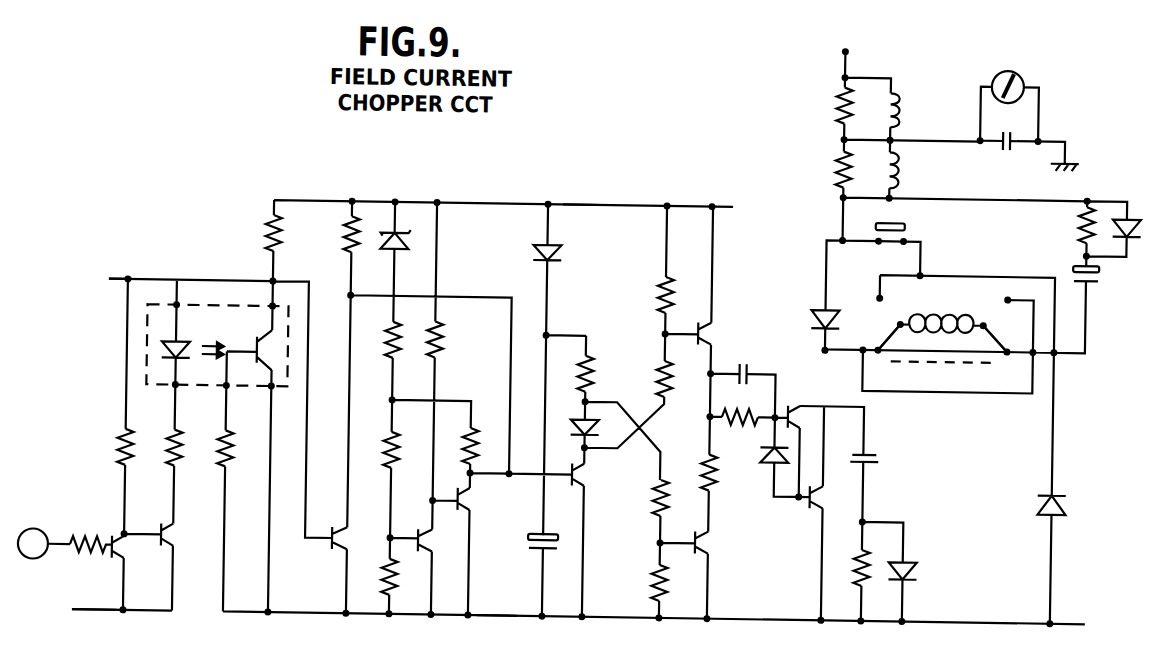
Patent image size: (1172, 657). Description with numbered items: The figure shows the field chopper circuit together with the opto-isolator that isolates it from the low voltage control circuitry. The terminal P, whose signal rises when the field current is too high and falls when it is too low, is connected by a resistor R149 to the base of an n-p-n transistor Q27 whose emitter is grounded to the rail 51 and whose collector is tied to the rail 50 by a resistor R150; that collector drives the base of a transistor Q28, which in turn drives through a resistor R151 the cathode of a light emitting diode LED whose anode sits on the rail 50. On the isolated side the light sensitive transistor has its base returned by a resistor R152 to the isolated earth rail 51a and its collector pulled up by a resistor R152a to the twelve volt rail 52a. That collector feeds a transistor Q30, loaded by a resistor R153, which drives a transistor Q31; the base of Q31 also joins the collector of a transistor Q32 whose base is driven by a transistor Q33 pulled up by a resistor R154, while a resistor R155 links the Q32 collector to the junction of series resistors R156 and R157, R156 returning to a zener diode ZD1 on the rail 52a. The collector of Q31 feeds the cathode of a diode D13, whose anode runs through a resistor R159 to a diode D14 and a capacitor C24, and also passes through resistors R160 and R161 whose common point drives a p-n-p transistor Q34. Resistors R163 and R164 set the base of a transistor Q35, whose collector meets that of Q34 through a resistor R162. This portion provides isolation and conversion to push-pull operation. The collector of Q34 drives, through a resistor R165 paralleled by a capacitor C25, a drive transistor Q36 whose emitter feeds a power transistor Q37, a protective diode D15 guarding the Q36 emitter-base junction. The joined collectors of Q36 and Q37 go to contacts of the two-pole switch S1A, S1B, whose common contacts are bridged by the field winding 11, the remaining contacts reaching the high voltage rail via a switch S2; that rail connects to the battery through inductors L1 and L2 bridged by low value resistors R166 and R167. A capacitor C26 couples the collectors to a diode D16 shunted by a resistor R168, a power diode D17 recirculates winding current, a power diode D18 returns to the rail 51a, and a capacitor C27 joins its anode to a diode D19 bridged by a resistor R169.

The rail 50 is at (109, 286).
The rail 51 is at (104, 615).
The isolated earth rail 51a is at (511, 605).
The 12V rail 52a is at (575, 204).
The terminal P is at (44, 543).
The resistor R149 is at (80, 548).
The n-p-n transistor Q27 is at (118, 556).
The transistor Q28 is at (170, 543).
The resistor R150 is at (116, 455).
The resistor R151 is at (166, 455).
The resistor R152 is at (216, 455).
The light emitting diode LED is at (163, 317).
The resistor R152a is at (262, 252).
The resistor R153 is at (340, 250).
The zener diode ZD1 is at (404, 248).
The resistor R156 is at (384, 348).
The resistor R154 is at (444, 348).
The resistor R155 is at (484, 426).
The resistor R157 is at (384, 458).
The n-p-n transistor Q30 is at (346, 544).
The transistor Q33 is at (428, 548).
The transistor Q32 is at (466, 502).
The capacitor C24 is at (530, 545).
The diode D14 is at (562, 256).
The resistor R159 is at (578, 380).
The diode D13 is at (572, 426).
The transistor Q31 is at (582, 477).
The resistor R161 is at (678, 296).
The resistor R160 is at (654, 382).
The p-n-p transistor Q34 is at (706, 334).
The capacitor C25 is at (740, 364).
The resistor R165 is at (736, 420).
The resistor R162 is at (718, 466).
The protective diode D15 is at (761, 452).
The resistor R163 is at (648, 504).
The resistor R164 is at (652, 588).
The n-p-n transistor Q35 is at (704, 545).
The drive transistor Q36 is at (788, 410).
The power transistor Q37 is at (816, 500).
The power diode D17 is at (814, 314).
The capacitor C26 is at (880, 458).
The resistor R168 is at (856, 570).
The diode D16 is at (918, 568).
The power diode D18 is at (1068, 500).
The diode D19 is at (1132, 212).
The resistor R169 is at (1076, 234).
The capacitor C27 is at (1098, 272).
The switch S2 is at (890, 232).
The switch pole S1A is at (880, 328).
The switch pole S1B is at (995, 326).
The field winding 11 is at (932, 312).
The resistor R167 is at (832, 118).
The resistor R166 is at (832, 180).
The inductor L2 is at (896, 112).
The inductor L1 is at (896, 178).